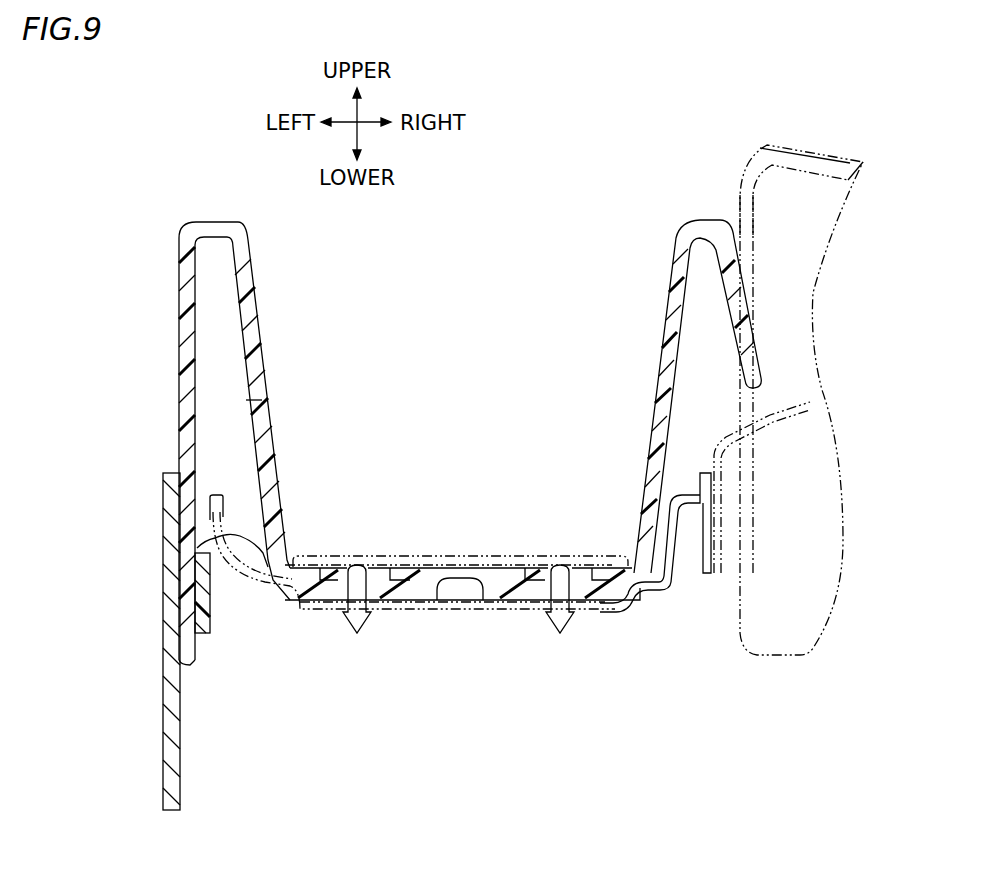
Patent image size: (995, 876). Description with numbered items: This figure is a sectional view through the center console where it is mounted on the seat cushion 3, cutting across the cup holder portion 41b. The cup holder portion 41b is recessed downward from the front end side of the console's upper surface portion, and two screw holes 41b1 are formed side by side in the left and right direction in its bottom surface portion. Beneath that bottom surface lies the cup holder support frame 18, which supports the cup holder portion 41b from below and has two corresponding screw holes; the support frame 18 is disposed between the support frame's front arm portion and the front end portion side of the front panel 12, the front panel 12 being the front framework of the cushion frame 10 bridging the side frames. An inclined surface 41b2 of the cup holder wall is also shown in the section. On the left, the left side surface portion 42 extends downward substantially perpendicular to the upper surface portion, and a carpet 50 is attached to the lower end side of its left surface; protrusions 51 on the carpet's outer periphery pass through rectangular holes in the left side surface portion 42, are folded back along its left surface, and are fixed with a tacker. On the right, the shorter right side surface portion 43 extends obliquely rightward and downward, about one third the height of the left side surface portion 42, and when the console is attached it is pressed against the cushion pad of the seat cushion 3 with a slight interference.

The seat cushion 3 is at (812, 140).
The cushion frame 10 is at (822, 400).
The front panel 12 is at (772, 423).
The cup holder support frame 18 is at (457, 612).
The cup holder portion 41b is at (262, 320).
The screw holes 41b1 is at (358, 572).
The inclined surface of clip wall 41b2 is at (272, 408).
The left side surface portion 42 is at (178, 347).
The right side surface portion 43 is at (752, 290).
The carpet 50 is at (163, 762).
The protrusions 51 is at (212, 612).